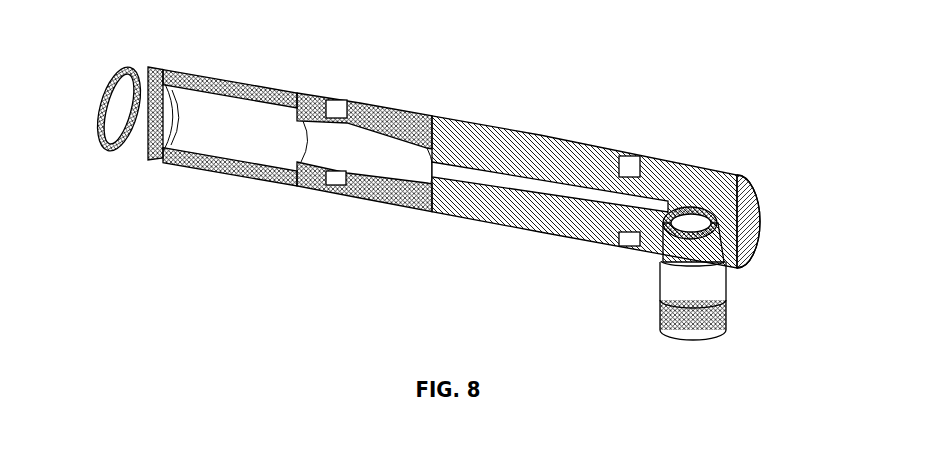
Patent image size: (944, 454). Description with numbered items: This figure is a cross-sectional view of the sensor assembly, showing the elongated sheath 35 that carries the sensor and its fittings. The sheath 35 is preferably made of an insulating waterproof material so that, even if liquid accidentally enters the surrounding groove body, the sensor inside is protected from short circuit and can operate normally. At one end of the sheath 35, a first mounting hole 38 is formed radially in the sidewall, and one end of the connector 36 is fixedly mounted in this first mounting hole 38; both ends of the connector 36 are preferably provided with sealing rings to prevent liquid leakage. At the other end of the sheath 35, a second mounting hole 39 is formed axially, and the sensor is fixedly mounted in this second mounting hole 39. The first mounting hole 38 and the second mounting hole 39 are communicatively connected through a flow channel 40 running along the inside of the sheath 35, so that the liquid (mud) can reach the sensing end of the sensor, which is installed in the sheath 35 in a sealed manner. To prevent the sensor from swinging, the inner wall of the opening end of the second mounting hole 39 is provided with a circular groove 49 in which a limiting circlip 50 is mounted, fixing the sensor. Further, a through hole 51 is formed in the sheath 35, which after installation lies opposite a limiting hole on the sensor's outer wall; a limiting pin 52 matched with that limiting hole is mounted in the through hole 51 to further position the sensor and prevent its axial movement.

The sheath 35 is at (455, 132).
The connector 36 is at (672, 283).
The first mounting hole 38 is at (735, 203).
The second mounting hole 39 is at (260, 130).
The flow channel 40 is at (553, 138).
The circular groove 49 is at (173, 133).
The limiting circlip 50 is at (113, 68).
The through hole 51 is at (187, 72).
The limiting pin 52 is at (180, 63).